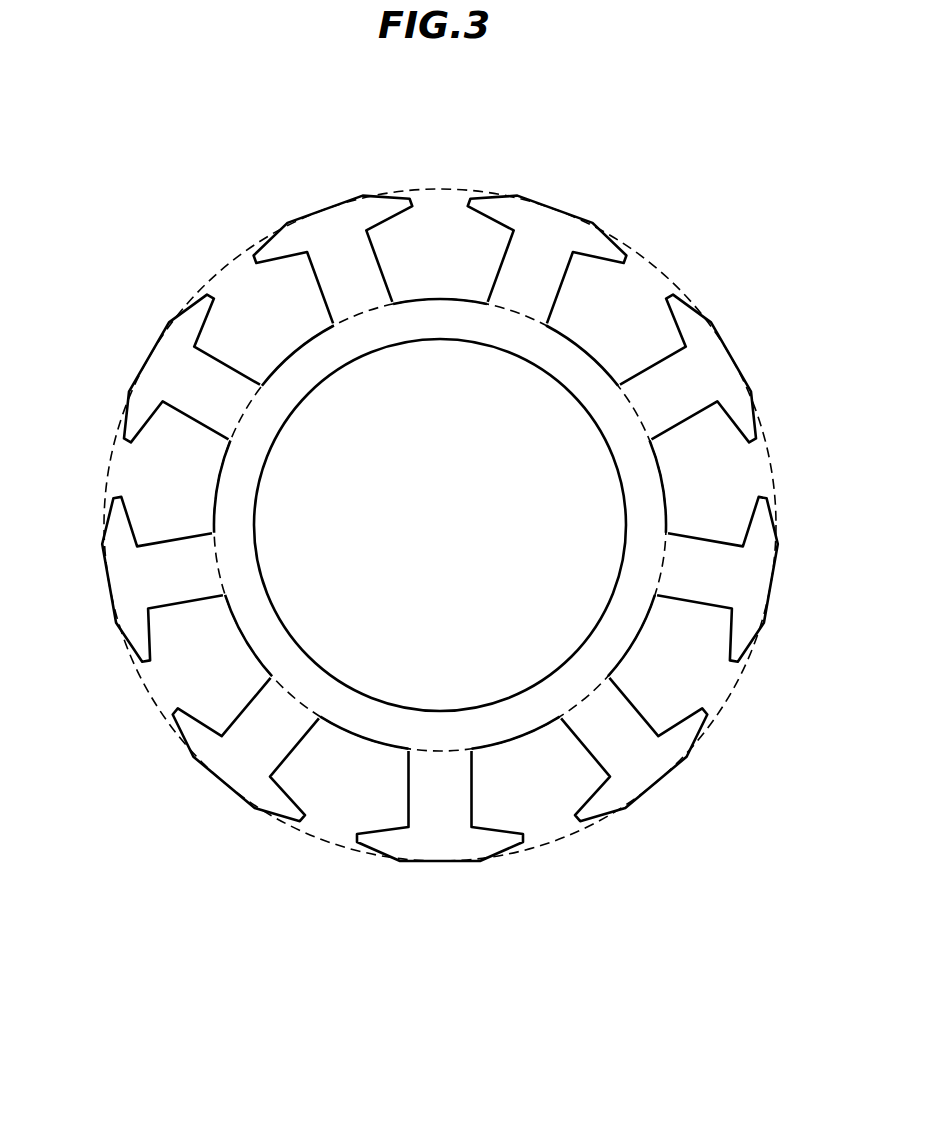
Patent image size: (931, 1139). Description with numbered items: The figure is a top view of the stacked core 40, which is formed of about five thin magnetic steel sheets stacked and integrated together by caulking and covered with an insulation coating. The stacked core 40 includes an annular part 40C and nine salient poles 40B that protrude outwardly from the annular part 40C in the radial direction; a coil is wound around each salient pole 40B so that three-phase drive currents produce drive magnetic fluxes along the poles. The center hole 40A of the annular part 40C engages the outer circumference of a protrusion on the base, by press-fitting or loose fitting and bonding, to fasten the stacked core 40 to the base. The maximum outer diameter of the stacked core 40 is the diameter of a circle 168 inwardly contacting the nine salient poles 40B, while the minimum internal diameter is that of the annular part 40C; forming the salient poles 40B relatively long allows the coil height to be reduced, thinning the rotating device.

The stacked core 40 is at (456, 981).
The center hole 40A is at (574, 396).
The salient poles 40B is at (325, 230).
The annular part 40C is at (648, 493).
The circle 168 is at (333, 845).